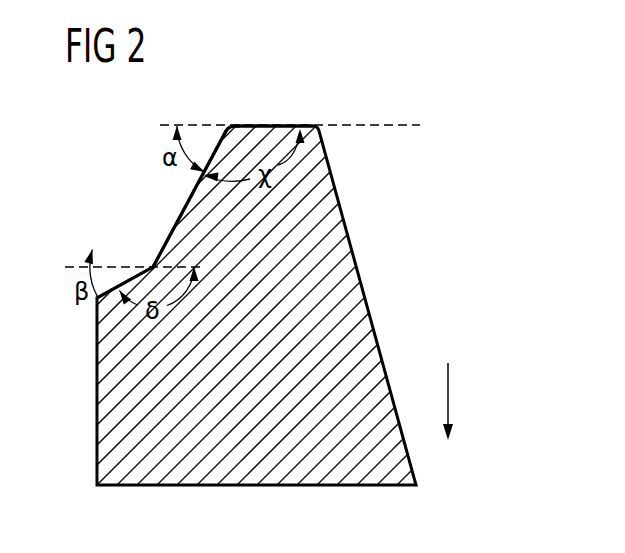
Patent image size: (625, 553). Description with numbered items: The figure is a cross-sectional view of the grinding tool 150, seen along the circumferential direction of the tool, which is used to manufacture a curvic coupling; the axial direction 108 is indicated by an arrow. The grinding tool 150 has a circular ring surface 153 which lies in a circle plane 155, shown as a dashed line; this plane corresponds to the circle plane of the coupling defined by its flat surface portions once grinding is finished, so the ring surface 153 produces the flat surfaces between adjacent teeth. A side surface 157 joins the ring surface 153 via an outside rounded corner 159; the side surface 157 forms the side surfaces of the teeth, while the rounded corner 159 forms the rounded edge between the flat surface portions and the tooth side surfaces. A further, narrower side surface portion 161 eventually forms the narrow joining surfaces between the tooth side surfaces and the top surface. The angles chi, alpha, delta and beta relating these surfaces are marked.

The grinding tool 150 is at (447, 278).
The axial direction 108 is at (448, 390).
The circular ring surface 153 is at (265, 125).
The circle plane 155 is at (380, 128).
The side surface 157 is at (198, 185).
The outside rounded corner 159 is at (229, 125).
The narrow side surface portion 161 is at (119, 283).